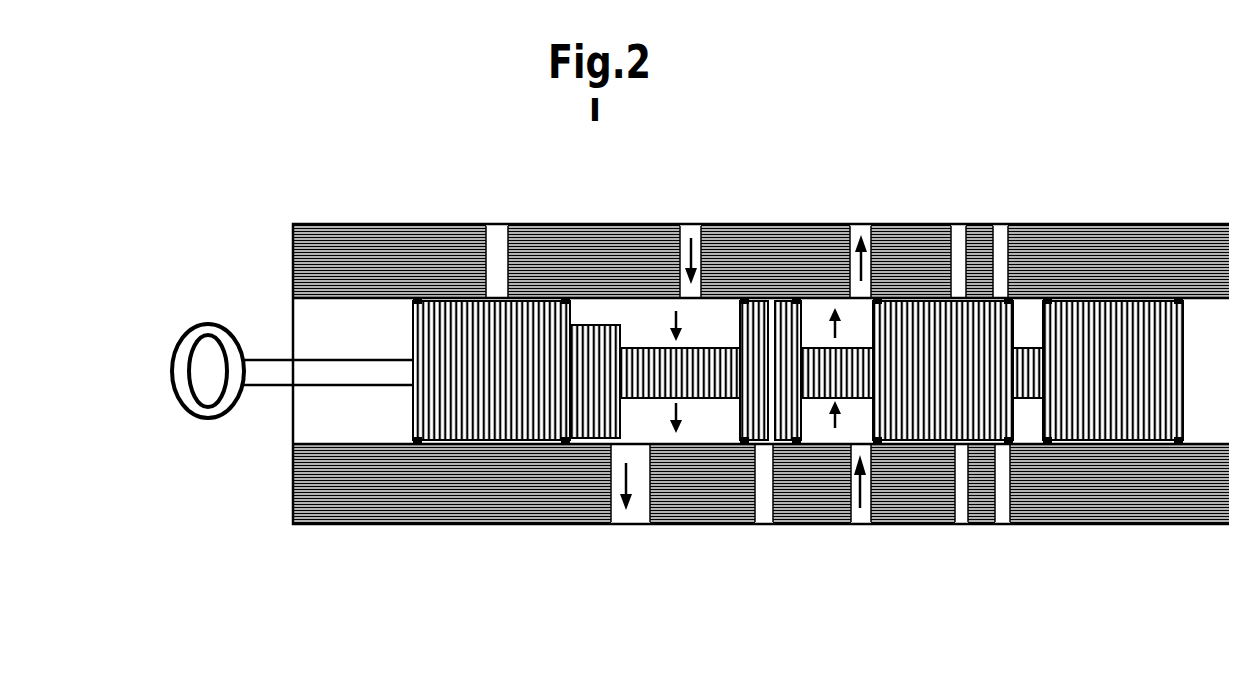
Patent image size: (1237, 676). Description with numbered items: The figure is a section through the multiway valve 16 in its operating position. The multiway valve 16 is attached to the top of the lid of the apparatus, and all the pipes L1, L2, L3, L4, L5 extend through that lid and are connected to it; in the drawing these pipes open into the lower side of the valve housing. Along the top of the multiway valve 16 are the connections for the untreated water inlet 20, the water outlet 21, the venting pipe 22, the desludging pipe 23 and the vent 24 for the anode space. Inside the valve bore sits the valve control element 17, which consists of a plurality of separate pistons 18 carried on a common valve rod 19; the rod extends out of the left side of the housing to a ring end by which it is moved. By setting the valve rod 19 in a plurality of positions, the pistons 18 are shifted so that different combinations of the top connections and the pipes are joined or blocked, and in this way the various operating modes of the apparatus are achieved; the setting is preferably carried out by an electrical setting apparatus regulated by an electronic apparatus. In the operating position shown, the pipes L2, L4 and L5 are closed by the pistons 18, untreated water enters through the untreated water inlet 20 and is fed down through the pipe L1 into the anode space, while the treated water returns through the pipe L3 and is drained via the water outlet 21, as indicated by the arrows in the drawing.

The multiway valve 16 is at (1095, 238).
The valve control element 17 is at (677, 370).
The pistons 18 is at (407, 323).
The valve rod 19 is at (303, 368).
The untreated water inlet 20 is at (675, 232).
The water outlet 21 is at (848, 223).
The venting pipe 22 is at (948, 260).
The desludging pipe 23 is at (988, 260).
The vent for the anode space 24 is at (490, 245).
The pipe L1 is at (608, 505).
The pipe L2 is at (753, 503).
The pipe L3 is at (848, 505).
The pipe L4 is at (953, 505).
The pipe L5 is at (996, 505).